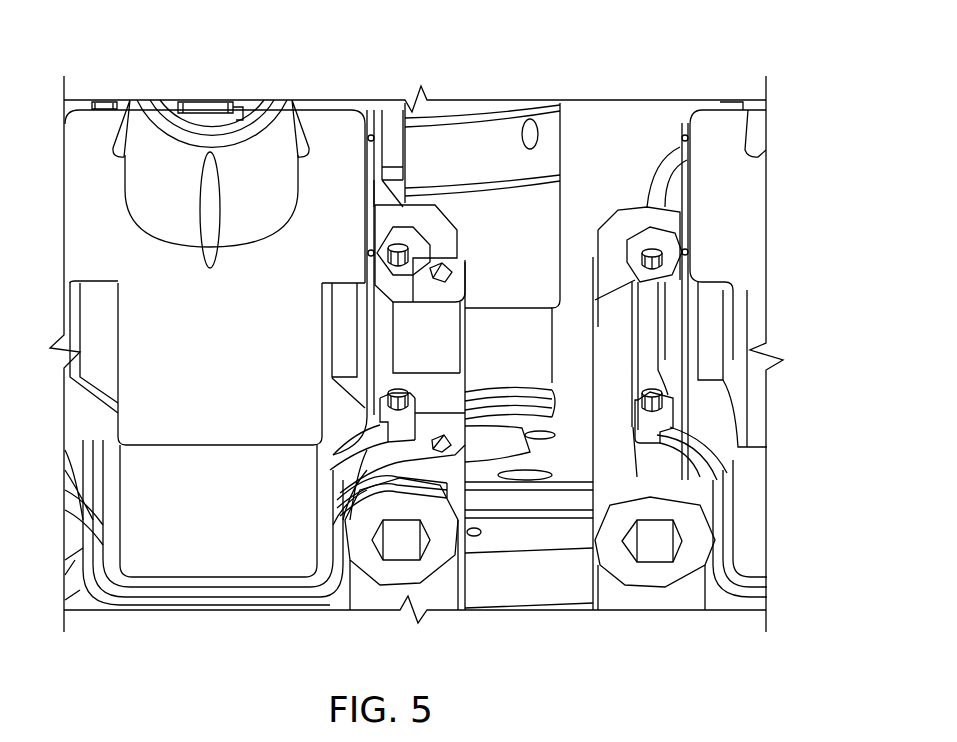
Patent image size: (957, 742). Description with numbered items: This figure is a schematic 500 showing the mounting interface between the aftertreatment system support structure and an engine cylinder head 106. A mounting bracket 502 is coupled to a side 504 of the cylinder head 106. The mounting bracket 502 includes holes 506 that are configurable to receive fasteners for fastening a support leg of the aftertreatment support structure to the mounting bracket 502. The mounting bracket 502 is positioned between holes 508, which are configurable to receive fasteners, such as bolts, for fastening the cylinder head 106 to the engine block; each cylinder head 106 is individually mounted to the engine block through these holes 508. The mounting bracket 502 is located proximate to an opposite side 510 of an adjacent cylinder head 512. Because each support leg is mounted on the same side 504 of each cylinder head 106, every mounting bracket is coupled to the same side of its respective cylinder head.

The schematic 500 is at (760, 36).
The cylinder head 106 is at (340, 190).
The mounting bracket 502 is at (462, 412).
The side 504 is at (396, 243).
The holes 506 is at (442, 423).
The holes 508 is at (410, 243).
The opposite side 510 is at (683, 237).
The adjacent cylinder head 512 is at (737, 262).